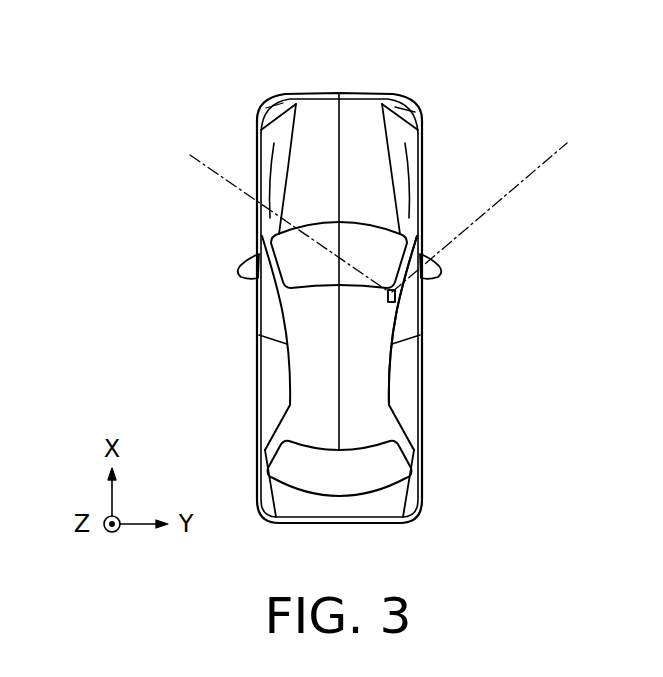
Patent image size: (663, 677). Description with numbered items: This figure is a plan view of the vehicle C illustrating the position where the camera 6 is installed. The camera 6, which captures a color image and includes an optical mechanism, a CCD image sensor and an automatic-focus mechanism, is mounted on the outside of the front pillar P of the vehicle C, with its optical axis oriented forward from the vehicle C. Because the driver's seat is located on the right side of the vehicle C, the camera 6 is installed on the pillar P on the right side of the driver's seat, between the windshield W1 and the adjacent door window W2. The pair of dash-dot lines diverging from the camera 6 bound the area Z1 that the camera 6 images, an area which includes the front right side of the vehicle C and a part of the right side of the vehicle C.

The vehicle C is at (322, 93).
The windshield W1 is at (325, 232).
The front pillar P is at (389, 290).
The camera 6 is at (389, 303).
The door window W2 is at (401, 313).
The area Z1 is at (451, 152).